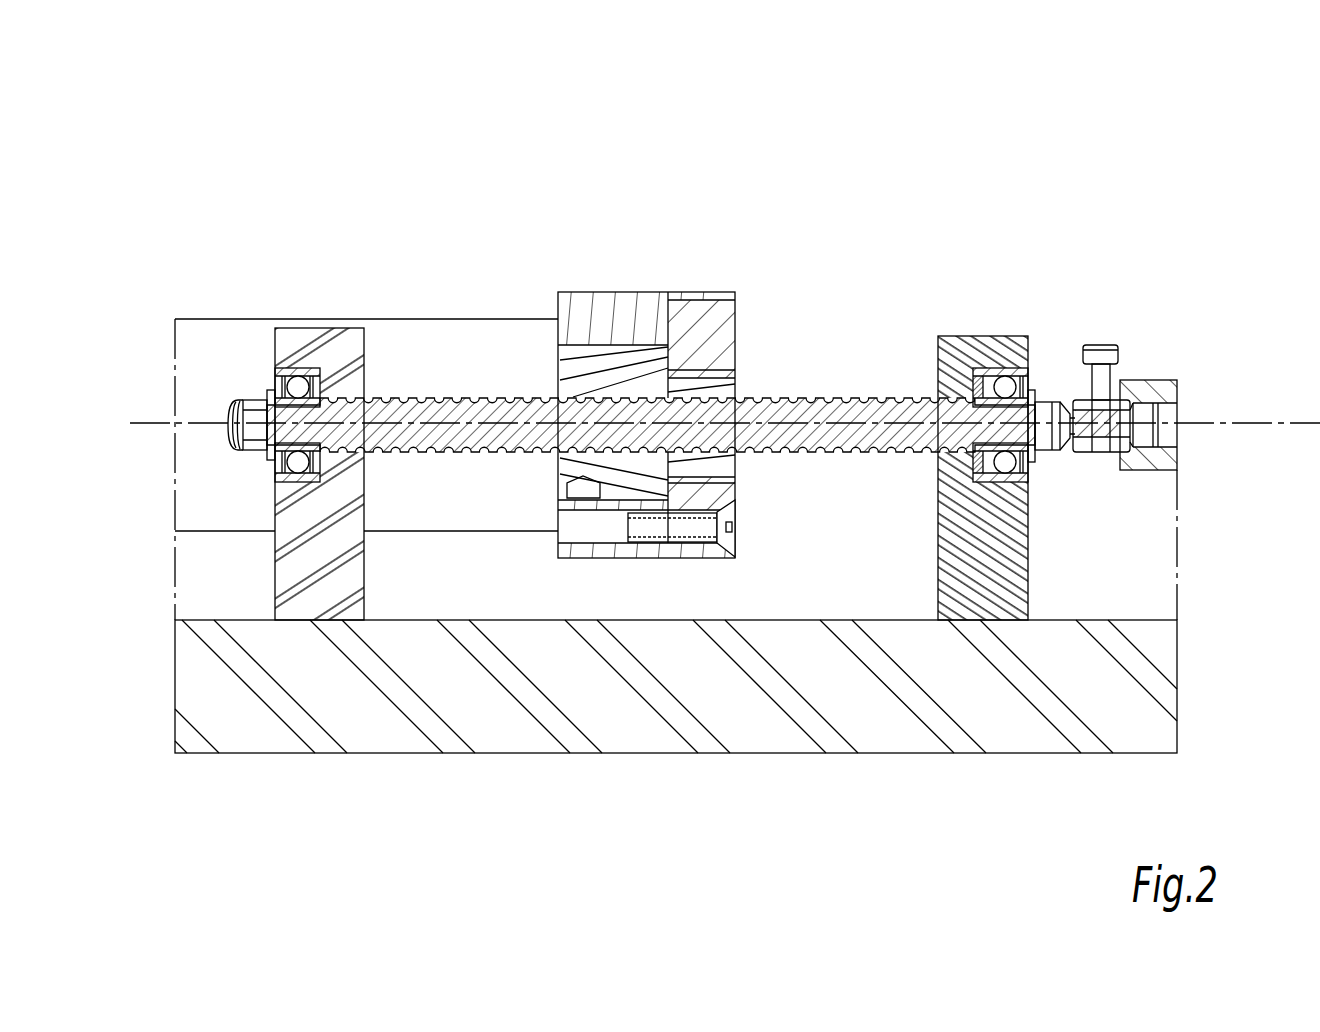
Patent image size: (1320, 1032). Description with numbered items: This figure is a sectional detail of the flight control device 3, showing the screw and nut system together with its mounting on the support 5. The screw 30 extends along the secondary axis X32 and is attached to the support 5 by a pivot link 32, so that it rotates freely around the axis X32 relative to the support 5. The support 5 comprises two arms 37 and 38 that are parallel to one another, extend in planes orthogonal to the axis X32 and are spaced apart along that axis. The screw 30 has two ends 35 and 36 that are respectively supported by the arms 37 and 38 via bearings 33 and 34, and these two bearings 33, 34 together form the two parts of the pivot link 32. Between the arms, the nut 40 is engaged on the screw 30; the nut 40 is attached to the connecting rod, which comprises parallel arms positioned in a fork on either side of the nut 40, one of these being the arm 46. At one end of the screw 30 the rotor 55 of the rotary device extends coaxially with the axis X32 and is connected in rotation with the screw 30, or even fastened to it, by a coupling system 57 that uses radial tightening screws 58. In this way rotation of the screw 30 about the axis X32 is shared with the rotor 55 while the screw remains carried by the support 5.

The flight control device 3 is at (368, 180).
The support 5 is at (773, 648).
The screw 30 is at (468, 410).
The pivot link 32 is at (638, 108).
The bearing 33 is at (292, 420).
The bearing 34 is at (990, 400).
The end 35 is at (317, 370).
The end 36 is at (998, 390).
The arm 37 is at (312, 585).
The arm 38 is at (982, 577).
The nut 40 is at (633, 310).
The arm 46 is at (508, 340).
The rotor 55 is at (1147, 407).
The coupling system 57 is at (1078, 400).
The radial tightening screws 58 is at (1103, 357).
The secondary axis X32 is at (827, 400).